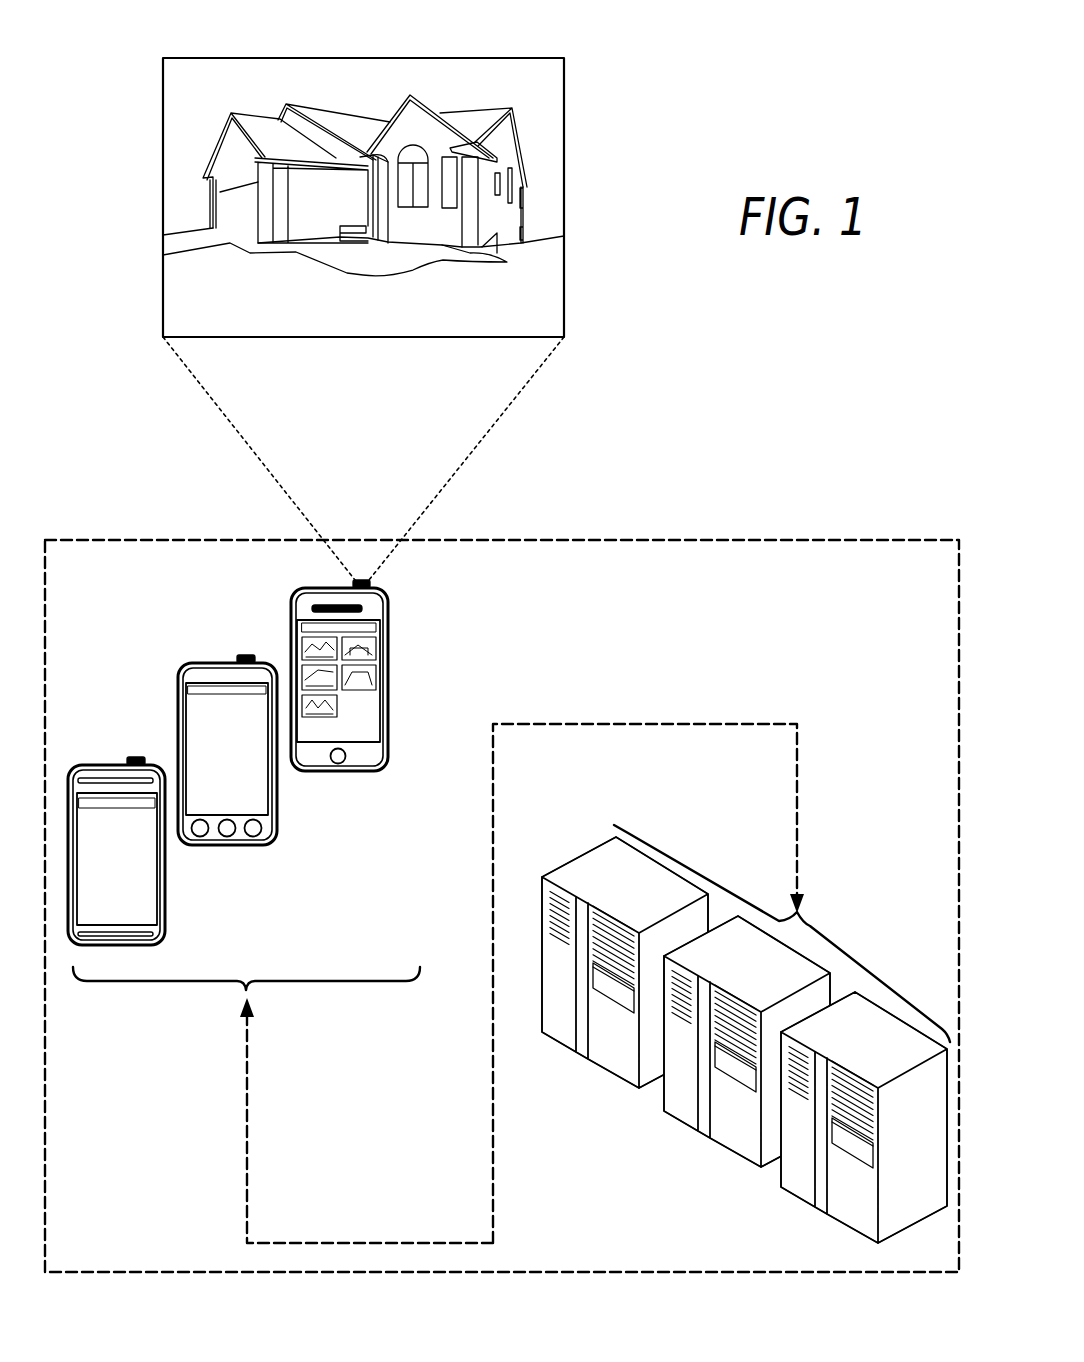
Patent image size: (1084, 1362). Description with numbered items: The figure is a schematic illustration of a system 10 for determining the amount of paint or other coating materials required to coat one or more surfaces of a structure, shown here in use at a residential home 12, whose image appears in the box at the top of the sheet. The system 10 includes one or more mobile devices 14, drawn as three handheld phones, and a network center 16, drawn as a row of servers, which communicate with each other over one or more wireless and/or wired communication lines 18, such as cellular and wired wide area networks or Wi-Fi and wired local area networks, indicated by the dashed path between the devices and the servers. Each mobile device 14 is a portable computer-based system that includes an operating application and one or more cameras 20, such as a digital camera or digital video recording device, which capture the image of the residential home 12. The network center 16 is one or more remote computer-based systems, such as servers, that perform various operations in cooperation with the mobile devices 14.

The system 10 is at (725, 540).
The residential home 12 is at (481, 106).
The mobile device 14 is at (389, 693).
The network center 16 is at (666, 1135).
The communication lines 18 is at (495, 795).
The camera 20 is at (374, 583).